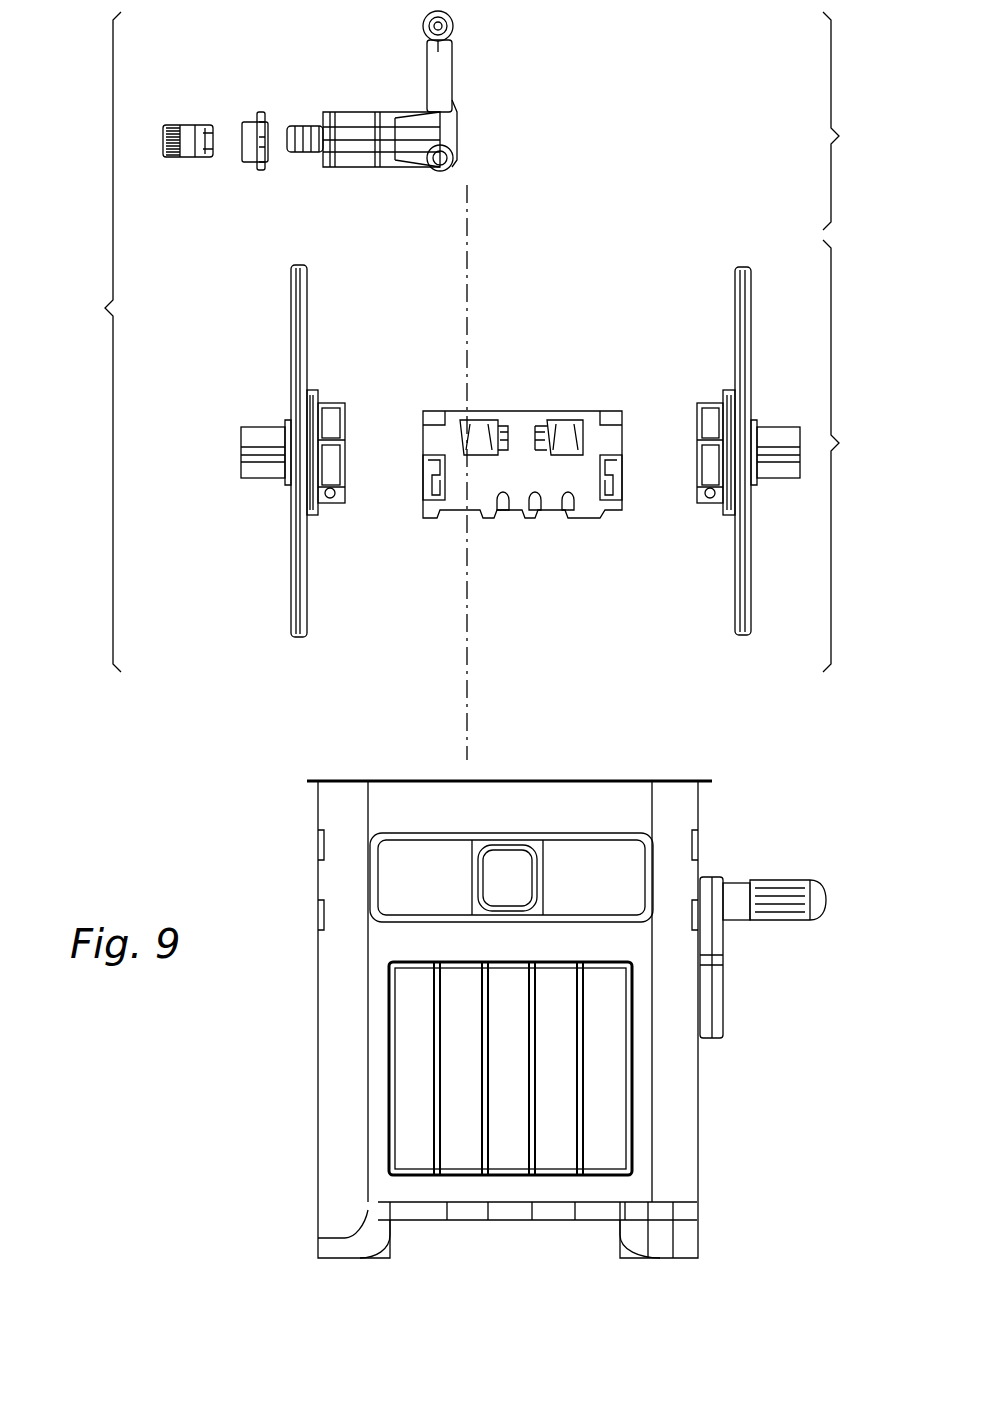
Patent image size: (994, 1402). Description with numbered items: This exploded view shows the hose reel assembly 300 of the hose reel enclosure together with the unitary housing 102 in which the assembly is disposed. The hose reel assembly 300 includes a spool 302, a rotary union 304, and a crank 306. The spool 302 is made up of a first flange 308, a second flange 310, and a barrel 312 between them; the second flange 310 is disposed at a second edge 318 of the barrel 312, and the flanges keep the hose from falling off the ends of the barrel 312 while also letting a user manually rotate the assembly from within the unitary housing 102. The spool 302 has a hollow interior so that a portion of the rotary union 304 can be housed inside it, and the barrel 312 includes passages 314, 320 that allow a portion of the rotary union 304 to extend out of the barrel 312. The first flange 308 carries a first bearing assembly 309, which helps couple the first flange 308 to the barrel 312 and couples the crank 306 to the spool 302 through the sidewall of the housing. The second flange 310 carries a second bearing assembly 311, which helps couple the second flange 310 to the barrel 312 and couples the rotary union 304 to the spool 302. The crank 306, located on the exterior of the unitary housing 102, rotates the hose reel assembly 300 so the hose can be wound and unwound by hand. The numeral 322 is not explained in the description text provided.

The hose reel assembly 300 is at (89, 342).
The spool 302 is at (857, 456).
The rotary union 304 is at (857, 121).
The crank 306 is at (737, 892).
The first flange 308 is at (292, 607).
The first bearing assembly 309 is at (718, 445).
The second flange 310 is at (430, 512).
The second bearing assembly 311 is at (330, 410).
The barrel 312 is at (586, 415).
The passage 314 is at (565, 432).
The second edge 318 is at (612, 512).
The passage 320 is at (478, 437).
The axle boss 322 is at (252, 440).
The unitary housing 102 is at (688, 800).